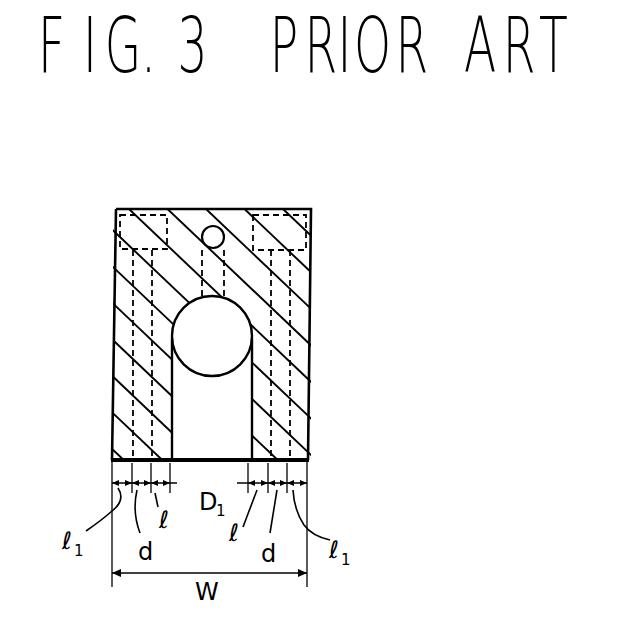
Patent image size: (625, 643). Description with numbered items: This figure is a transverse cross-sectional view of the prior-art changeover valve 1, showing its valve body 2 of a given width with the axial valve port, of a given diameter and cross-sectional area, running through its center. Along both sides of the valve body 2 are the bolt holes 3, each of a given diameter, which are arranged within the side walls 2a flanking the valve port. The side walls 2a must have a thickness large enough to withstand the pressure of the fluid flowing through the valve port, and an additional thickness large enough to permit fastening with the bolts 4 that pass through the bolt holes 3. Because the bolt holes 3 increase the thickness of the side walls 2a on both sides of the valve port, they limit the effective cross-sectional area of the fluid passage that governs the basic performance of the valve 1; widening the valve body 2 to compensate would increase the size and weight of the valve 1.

The changeover valve 1 is at (352, 191).
The valve body 2 is at (311, 281).
The side wall 2a is at (112, 377).
The bolt holes 3 is at (131, 285).
The bolts 4 is at (142, 213).